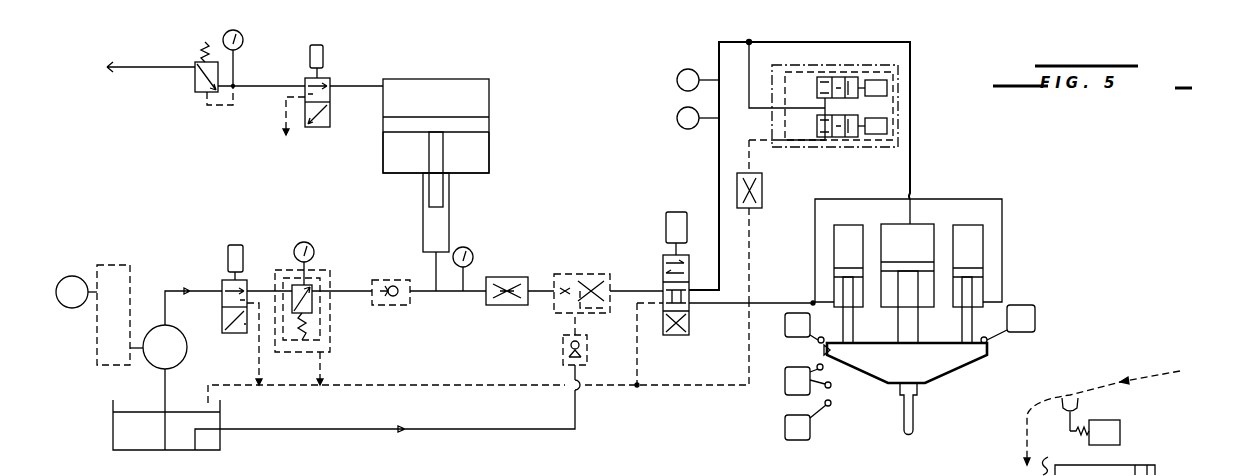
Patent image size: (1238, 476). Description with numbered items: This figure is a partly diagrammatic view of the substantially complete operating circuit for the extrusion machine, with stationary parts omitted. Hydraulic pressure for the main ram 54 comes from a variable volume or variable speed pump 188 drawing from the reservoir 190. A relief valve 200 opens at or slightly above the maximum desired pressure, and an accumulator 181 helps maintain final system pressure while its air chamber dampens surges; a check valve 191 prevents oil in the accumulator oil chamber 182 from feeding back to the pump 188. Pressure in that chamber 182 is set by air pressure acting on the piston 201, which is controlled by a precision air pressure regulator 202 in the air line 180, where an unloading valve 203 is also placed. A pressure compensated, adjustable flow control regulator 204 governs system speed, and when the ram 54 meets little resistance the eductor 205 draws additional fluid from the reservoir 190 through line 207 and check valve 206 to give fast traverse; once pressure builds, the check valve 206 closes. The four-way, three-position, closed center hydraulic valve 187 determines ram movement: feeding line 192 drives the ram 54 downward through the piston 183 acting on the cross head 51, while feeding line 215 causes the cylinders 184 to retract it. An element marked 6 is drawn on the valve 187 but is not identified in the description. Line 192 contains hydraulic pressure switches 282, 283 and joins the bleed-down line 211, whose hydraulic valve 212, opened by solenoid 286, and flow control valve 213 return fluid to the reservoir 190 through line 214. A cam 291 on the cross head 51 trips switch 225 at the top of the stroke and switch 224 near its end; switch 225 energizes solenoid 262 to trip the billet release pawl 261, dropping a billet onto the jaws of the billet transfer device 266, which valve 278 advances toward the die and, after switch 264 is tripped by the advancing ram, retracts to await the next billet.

The air line 180 is at (155, 68).
The precision air pressure regulator 202 is at (200, 94).
The unloading valve 203 is at (331, 78).
The piston 201 is at (490, 126).
The accumulator 181 is at (490, 160).
The oil chamber 182 is at (451, 226).
The pump 188 is at (188, 358).
The reservoir 190 is at (222, 442).
The line 207 is at (362, 429).
The check valve 206 is at (563, 353).
The relief valve 200 is at (329, 278).
The line 214 is at (449, 383).
The check valve 191 is at (389, 306).
The hydraulic flow control regulator 204 is at (522, 266).
The eductor 205 is at (592, 270).
The hydraulic valve 187 is at (670, 336).
The solenoid 6 is at (682, 203).
The line 215 is at (714, 304).
The line 192 is at (717, 150).
The hydraulic pressure switch 282 is at (670, 80).
The hydraulic pressure switch 283 is at (672, 118).
The bleed-down line 211 is at (749, 100).
The hydraulic valve 212 is at (840, 146).
The solenoid 286 is at (888, 87).
The flow control valve 213 is at (764, 189).
The cylinder 184 is at (864, 222).
The piston 183 is at (924, 252).
The cross head 51 is at (902, 360).
The main ram 54 is at (920, 416).
The switch 225 is at (785, 327).
The cam 291 is at (826, 351).
The switch 264 is at (786, 380).
The switch 224 is at (800, 430).
The billet release pawl 261 is at (1080, 406).
The solenoid 262 is at (1122, 433).
The billet transfer device 266 is at (1052, 466).
The valve 278 is at (1125, 469).